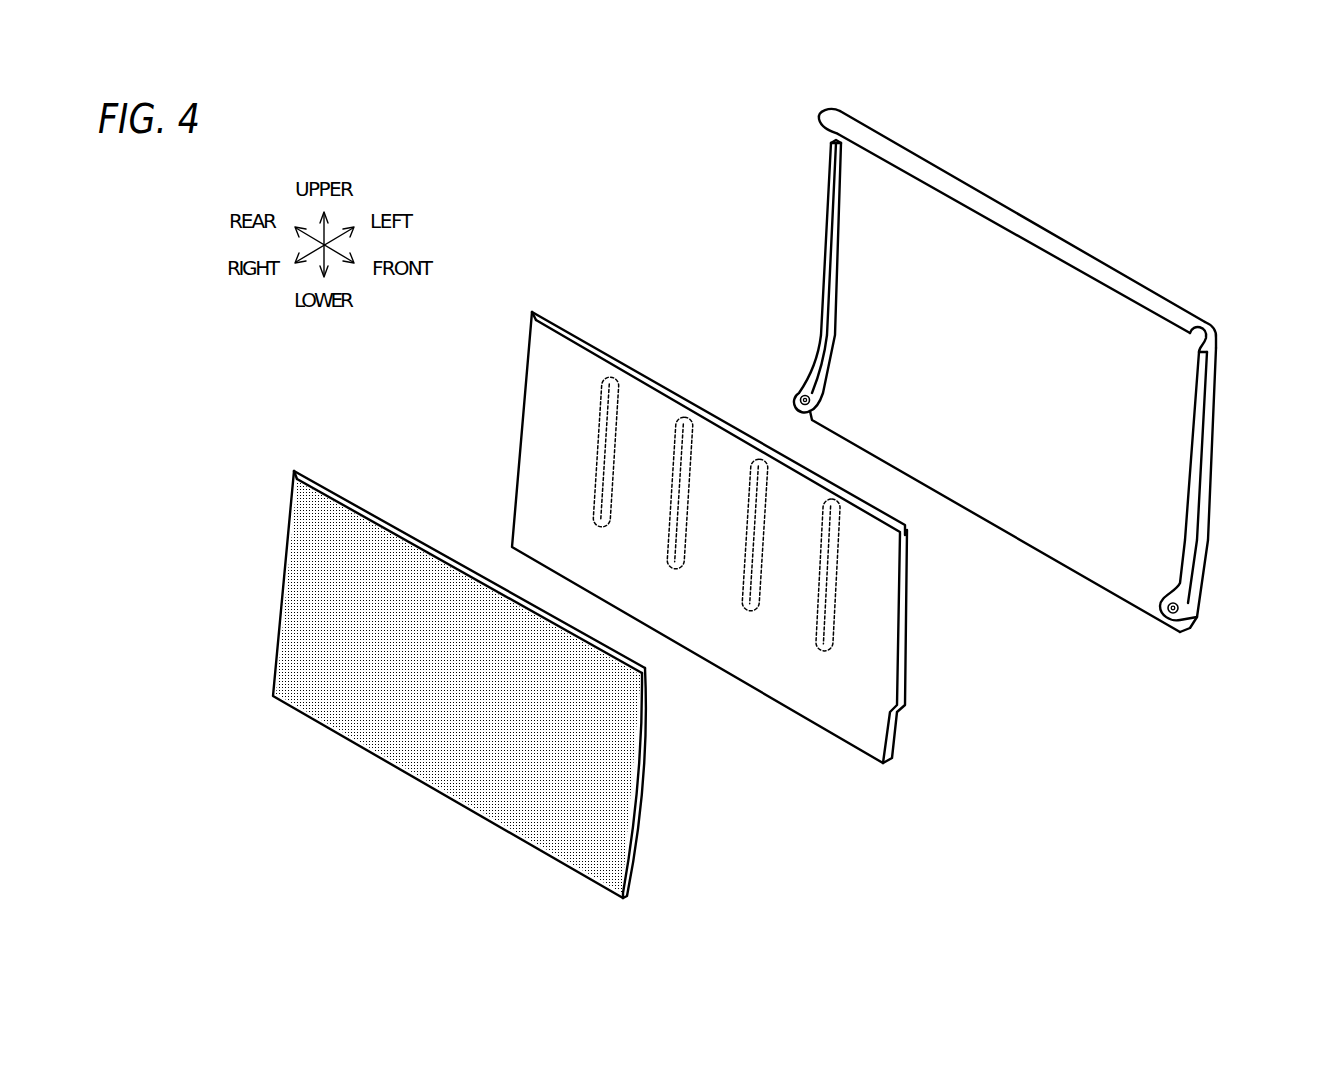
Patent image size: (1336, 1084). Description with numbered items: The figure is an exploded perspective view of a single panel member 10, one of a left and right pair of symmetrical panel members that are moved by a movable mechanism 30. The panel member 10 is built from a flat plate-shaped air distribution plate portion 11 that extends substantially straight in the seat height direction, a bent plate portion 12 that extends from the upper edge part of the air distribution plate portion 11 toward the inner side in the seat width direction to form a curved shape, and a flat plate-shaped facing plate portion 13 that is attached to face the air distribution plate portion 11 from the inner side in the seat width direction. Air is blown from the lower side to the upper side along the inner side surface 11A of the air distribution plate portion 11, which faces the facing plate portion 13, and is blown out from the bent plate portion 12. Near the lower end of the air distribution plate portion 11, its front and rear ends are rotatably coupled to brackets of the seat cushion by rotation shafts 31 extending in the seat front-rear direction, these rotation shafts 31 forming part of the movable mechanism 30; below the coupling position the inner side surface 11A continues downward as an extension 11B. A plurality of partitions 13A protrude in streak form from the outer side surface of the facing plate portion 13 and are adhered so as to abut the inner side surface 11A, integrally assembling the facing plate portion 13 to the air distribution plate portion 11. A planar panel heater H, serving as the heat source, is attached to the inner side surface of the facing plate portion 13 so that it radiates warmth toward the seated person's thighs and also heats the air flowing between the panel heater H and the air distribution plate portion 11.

The panel member 10 is at (1023, 370).
The air distribution plate portion 11 is at (1035, 386).
The inner side surface 11A is at (1031, 380).
The extension 11B is at (1025, 505).
The bent plate portion 12 is at (985, 200).
The facing plate portion 13 is at (709, 531).
The partition 13A is at (729, 470).
The movable mechanism 30 is at (1023, 461).
The rotation shaft 31 is at (798, 397).
The panel heater H is at (455, 748).